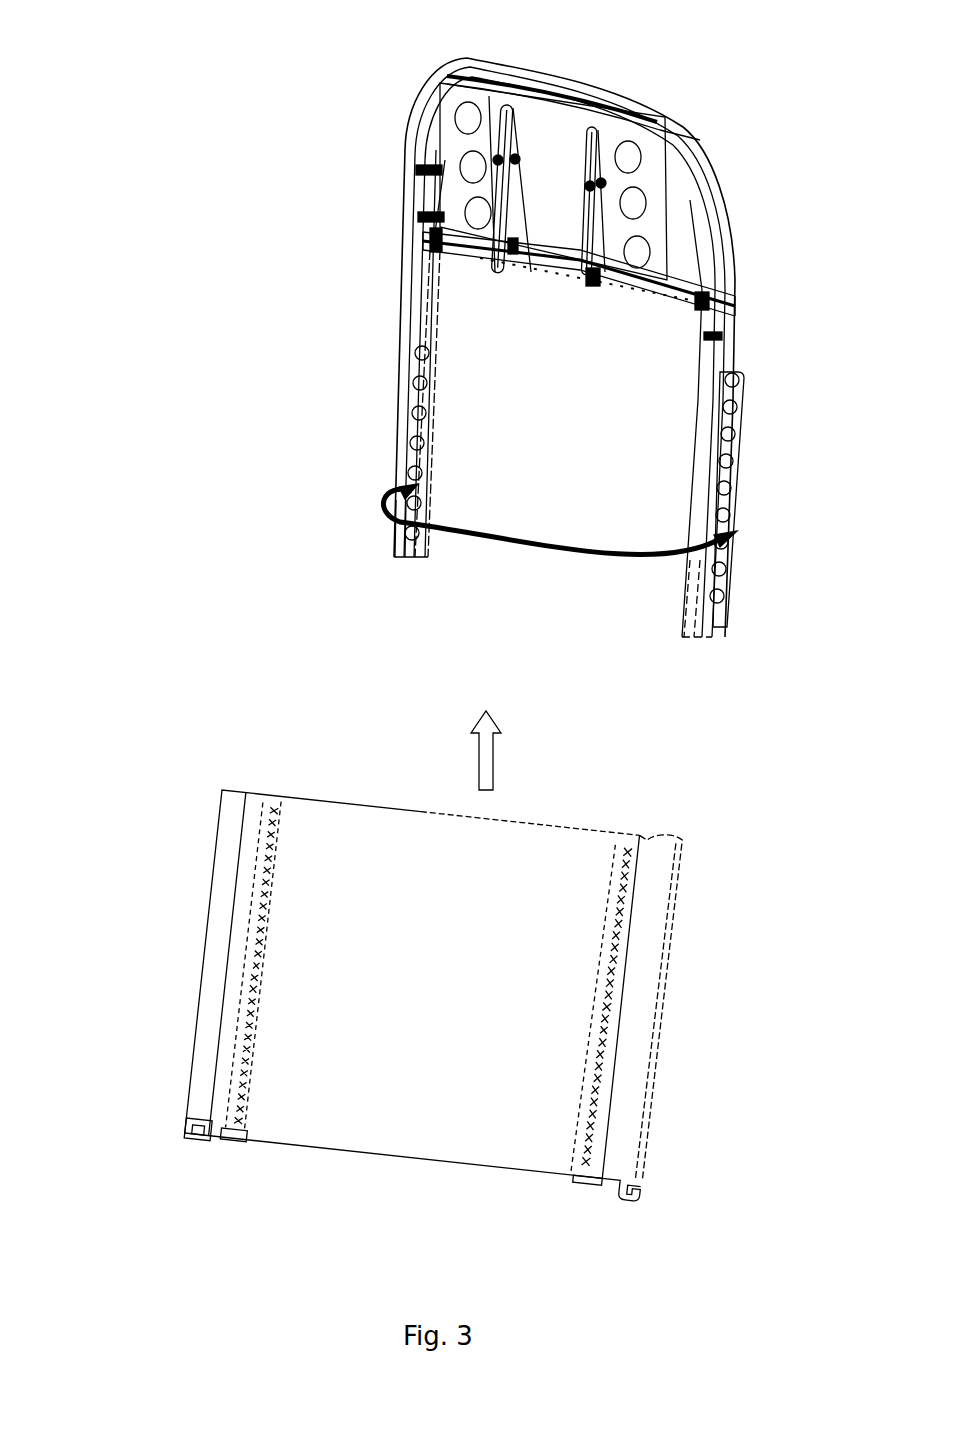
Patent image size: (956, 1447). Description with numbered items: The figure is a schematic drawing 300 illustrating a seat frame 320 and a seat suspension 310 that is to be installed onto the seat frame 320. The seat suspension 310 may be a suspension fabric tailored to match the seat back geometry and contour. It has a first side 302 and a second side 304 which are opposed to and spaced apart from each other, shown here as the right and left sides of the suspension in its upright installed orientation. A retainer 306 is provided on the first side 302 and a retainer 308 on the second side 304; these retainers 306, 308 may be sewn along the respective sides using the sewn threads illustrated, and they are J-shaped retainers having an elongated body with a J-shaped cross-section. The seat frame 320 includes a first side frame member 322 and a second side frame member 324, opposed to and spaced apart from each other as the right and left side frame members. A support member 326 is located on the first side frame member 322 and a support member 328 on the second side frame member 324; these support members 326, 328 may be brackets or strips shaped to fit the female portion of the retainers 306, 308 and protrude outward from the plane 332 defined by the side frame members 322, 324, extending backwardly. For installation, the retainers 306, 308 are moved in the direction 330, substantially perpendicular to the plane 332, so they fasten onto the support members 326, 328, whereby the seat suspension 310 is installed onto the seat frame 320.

The schematic drawing 300 is at (97, 80).
The seat suspension 310 is at (182, 776).
The seat frame 320 is at (384, 86).
The first side frame member 322 is at (679, 643).
The second side frame member 324 is at (396, 571).
The support member 326 is at (742, 386).
The support member 328 is at (402, 366).
The direction 330 is at (579, 519).
The plane 332 is at (582, 427).
The first side 302 is at (573, 1190).
The second side 304 is at (228, 1147).
The retainer 306 is at (641, 1167).
The retainer 308 is at (197, 1106).